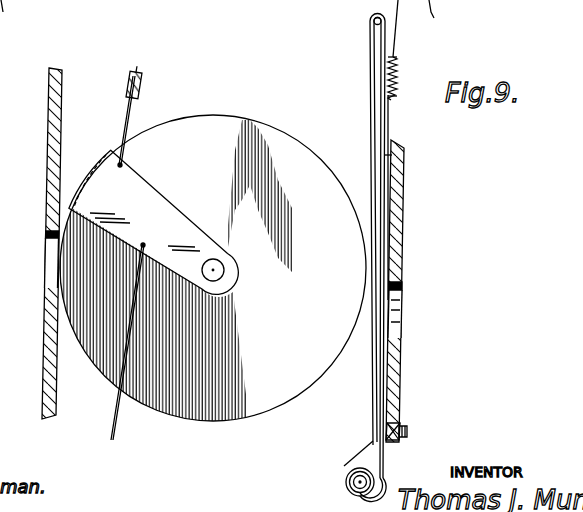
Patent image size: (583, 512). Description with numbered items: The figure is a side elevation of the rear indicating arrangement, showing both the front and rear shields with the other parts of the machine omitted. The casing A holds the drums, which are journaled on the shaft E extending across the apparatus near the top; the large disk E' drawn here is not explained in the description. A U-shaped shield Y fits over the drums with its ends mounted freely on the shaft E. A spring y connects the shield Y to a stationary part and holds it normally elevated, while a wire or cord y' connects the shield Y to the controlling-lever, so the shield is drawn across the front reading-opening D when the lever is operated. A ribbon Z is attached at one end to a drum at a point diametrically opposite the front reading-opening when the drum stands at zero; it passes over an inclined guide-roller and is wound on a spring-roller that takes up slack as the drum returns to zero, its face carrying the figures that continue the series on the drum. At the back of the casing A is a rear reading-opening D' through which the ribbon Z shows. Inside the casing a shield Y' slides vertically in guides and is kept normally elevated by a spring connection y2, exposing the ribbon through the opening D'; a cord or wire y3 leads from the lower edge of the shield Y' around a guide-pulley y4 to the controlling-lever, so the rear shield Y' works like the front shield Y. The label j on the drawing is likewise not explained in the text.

The casing A is at (50, 122).
The reading-opening D is at (38, 259).
The rear reading-opening D' is at (418, 308).
The shaft E is at (228, 270).
The disk E' is at (213, 268).
The shield Y is at (153, 222).
The shield Y' is at (410, 197).
The spring y is at (137, 115).
The wire or cord y' is at (127, 342).
The spring connection y2 is at (398, 70).
The cord or wire connection y3 is at (346, 483).
The guide-pulley y4 is at (402, 422).
The ribbon Z is at (369, 107).
The pivot pin j is at (356, 23).